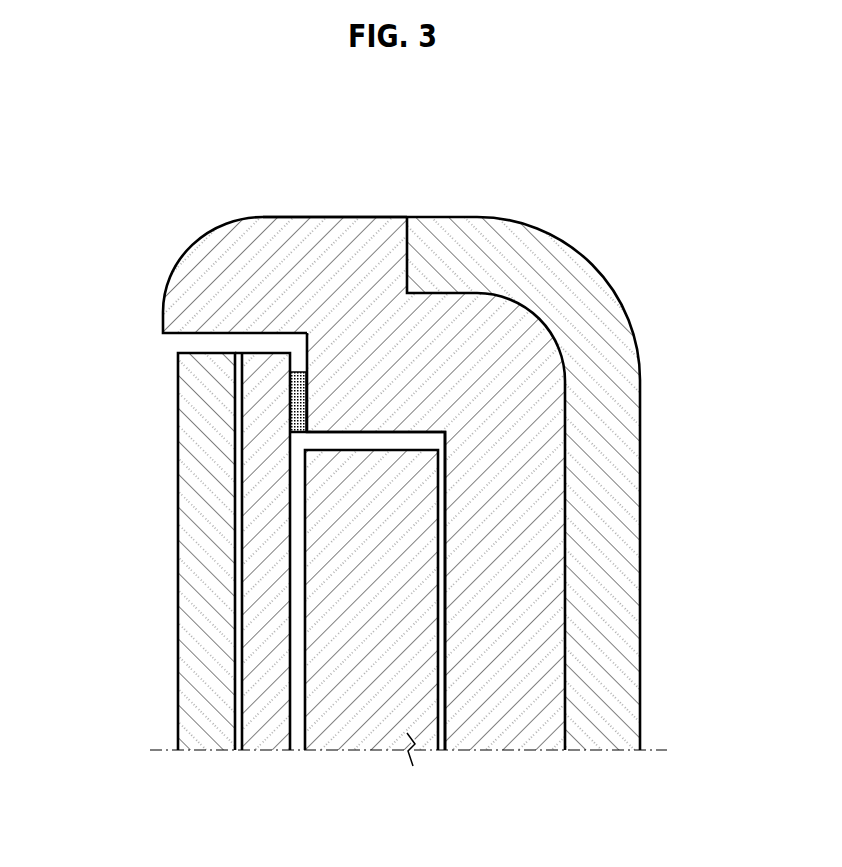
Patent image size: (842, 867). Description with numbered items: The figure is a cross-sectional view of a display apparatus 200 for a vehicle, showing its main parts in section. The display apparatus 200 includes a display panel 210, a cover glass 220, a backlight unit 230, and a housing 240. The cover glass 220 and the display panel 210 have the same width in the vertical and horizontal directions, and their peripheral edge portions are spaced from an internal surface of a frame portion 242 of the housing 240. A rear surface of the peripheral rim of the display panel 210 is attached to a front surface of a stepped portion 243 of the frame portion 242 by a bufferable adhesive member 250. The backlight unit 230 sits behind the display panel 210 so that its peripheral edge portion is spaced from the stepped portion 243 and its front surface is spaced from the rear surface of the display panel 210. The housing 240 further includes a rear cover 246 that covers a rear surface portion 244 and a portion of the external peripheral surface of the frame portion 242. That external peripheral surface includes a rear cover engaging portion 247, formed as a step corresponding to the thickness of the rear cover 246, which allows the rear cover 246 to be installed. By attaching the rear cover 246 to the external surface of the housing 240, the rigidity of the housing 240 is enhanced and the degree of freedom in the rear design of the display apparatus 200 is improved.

The display apparatus 200 is at (138, 224).
The display panel 210 is at (250, 531).
The cover glass 220 is at (192, 645).
The backlight unit 230 is at (368, 735).
The housing 240 is at (661, 460).
The frame portion 242 is at (357, 226).
The stepped portion 243 is at (323, 414).
The rear surface portion 244 is at (550, 630).
The rear cover 246 is at (625, 536).
The rear cover engaging portion 247 is at (408, 262).
The bufferable adhesive member 250 is at (298, 372).